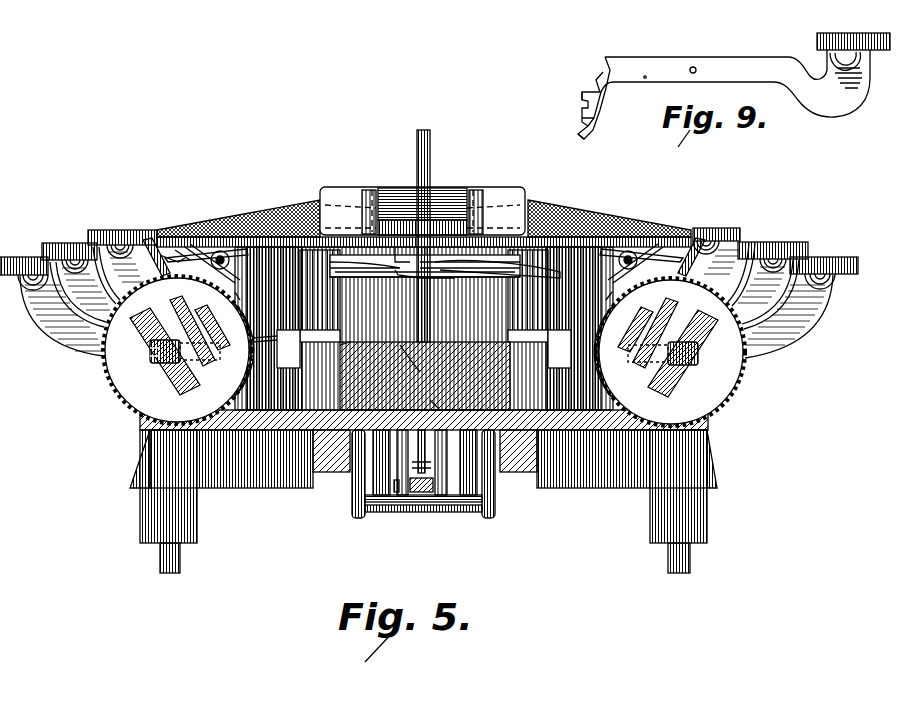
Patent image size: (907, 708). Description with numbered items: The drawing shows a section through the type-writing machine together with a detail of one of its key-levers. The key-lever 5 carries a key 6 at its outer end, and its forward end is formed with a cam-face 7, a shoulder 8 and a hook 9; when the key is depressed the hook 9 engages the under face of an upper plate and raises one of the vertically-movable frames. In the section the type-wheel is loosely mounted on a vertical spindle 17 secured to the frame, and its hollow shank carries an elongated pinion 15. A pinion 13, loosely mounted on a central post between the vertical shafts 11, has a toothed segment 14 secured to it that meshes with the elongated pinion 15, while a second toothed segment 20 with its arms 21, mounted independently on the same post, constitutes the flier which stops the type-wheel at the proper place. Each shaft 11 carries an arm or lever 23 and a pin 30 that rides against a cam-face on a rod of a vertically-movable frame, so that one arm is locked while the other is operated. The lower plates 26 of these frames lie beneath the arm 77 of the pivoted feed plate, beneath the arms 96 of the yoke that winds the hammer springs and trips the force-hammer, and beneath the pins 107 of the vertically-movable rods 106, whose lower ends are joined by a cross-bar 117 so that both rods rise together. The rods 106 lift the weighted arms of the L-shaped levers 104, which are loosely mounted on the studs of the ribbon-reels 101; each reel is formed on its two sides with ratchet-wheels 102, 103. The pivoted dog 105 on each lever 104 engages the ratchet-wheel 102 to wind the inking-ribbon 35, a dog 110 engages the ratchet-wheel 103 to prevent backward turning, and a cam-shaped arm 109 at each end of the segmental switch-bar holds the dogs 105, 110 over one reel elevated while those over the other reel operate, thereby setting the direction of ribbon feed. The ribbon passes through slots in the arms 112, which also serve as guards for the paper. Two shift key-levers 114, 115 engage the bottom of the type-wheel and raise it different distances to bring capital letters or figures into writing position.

In FIG. 9, the key-lever 5 is at (753, 43).
In FIG. 9, the key 6 is at (848, 32).
In FIG. 9, the cam-face 7 is at (600, 66).
In FIG. 9, the shoulder 8 is at (584, 90).
In FIG. 9, the hook 9 is at (578, 118).
In FIG. 5, the vertical spindle 17 is at (430, 135).
In FIG. 5, the arm 112 is at (340, 196).
In FIG. 5, the inking-ribbon 35 is at (440, 188).
In FIG. 5, the pinion 13 is at (478, 236).
In FIG. 5, the key-lever 115 is at (552, 248).
In FIG. 5, the dog 110 is at (200, 250).
In FIG. 5, the pivoted dog 105 is at (222, 250).
In FIG. 5, the cam-shaped arm 109 is at (178, 250).
In FIG. 5, the toothed segment 14 is at (316, 268).
In FIG. 5, the key-lever 114 is at (497, 269).
In FIG. 5, the vertical shaft 11 is at (312, 290).
In FIG. 5, the arm 21 is at (318, 308).
In FIG. 5, the L-shaped lever 104 is at (258, 354).
In FIG. 5, the ratchet-wheel 102 is at (240, 306).
In FIG. 5, the ribbon-reel 101 is at (183, 336).
In FIG. 5, the ratchet-wheel 103 is at (108, 382).
In FIG. 5, the toothed segment 20 is at (356, 352).
In FIG. 5, the elongated pinion 15 is at (425, 340).
In FIG. 5, the arm or lever 23 is at (417, 365).
In FIG. 5, the pin 30 is at (426, 407).
In FIG. 5, the vertically-movable rod 106 is at (340, 475).
In FIG. 5, the pin 107 is at (352, 496).
In FIG. 5, the plate 26 is at (386, 500).
In FIG. 5, the arm 77 is at (418, 495).
In FIG. 5, the cross-bar 117 is at (440, 510).
In FIG. 5, the arm 96 is at (397, 480).